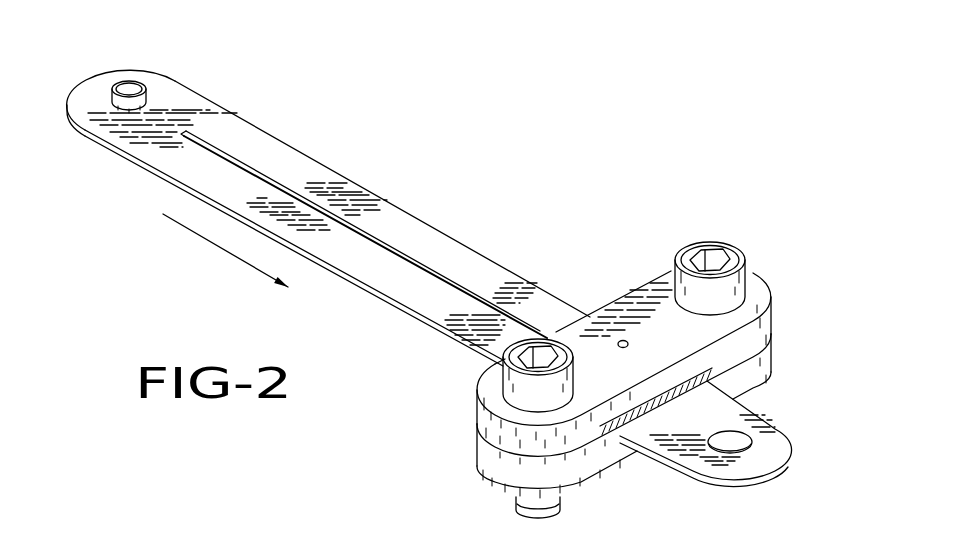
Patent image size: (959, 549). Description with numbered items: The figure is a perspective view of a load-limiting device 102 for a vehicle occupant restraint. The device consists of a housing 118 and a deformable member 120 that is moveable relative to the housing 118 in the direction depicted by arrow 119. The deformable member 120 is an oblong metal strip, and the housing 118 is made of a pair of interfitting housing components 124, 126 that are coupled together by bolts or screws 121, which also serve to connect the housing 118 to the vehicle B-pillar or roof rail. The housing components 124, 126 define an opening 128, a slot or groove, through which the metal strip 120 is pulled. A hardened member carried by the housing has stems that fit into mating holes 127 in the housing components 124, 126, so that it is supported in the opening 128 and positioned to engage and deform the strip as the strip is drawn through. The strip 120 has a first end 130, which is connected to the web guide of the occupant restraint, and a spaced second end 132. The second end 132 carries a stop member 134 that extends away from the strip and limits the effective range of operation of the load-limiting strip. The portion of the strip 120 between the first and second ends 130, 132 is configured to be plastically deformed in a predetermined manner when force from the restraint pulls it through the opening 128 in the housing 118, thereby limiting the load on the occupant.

The load-limiting device 102 is at (514, 198).
The housing 118 is at (762, 281).
The arrow 119 is at (227, 252).
The deformable member 120 is at (300, 152).
The bolts or screws 121 is at (694, 252).
The housing component 124 is at (658, 324).
The housing component 126 is at (493, 478).
The mating hole 127 is at (619, 342).
The opening 128 is at (612, 441).
The first end 130 is at (770, 457).
The second end 132 is at (78, 88).
The stop member 134 is at (133, 88).